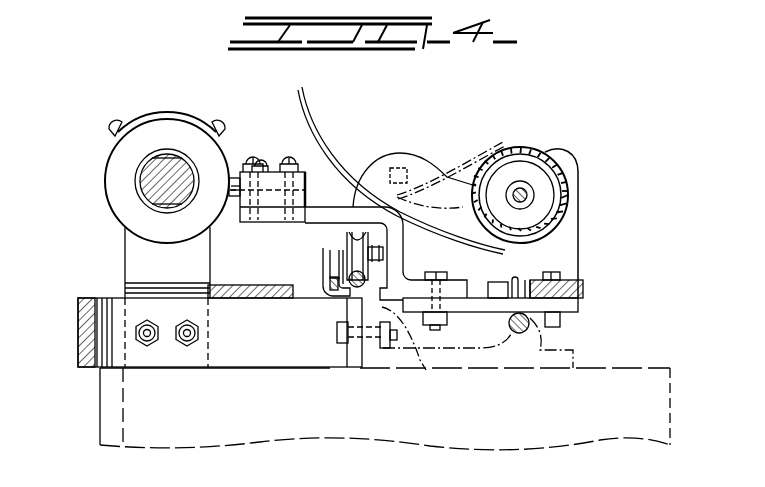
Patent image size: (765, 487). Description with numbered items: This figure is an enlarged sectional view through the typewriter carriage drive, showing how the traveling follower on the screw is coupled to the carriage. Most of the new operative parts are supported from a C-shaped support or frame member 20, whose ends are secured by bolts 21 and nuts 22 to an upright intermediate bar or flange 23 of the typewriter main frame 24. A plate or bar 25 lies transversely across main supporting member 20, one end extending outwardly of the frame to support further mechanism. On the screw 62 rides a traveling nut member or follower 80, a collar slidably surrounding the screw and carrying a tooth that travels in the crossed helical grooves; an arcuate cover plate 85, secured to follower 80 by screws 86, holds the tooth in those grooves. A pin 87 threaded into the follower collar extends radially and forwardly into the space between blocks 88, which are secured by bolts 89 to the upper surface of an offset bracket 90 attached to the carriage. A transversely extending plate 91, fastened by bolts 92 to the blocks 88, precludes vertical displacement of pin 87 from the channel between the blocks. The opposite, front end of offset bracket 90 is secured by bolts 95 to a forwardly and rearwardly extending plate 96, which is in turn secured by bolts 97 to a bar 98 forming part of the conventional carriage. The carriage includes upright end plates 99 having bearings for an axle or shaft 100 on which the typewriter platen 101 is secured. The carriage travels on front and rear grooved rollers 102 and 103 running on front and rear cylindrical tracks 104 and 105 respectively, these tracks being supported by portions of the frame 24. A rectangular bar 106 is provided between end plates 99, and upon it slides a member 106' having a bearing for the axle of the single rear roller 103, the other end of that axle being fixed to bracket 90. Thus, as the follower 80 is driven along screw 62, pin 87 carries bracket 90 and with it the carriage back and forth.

The C-shaped support or frame member 20 is at (90, 338).
The bolts 21 is at (336, 335).
The nuts 22 is at (386, 350).
The upright intermediate bar or flange 23 is at (418, 372).
The main frame 24 is at (634, 368).
The plate or bar 25 is at (243, 285).
The screw 62 is at (148, 188).
The traveling nut member or follower 80 is at (120, 170).
The arcuate cover plate 85 is at (167, 114).
The screws 86 is at (115, 127).
The pin 87 is at (233, 197).
The blocks 88 is at (305, 190).
The bolts 89 is at (291, 165).
The offset bracket 90 is at (320, 217).
The transversely extending plate 91 is at (264, 166).
The bolts 92 is at (252, 161).
The bolts 95 is at (440, 272).
The forwardly and rearwardly extending plate 96 is at (478, 300).
The bolts 97 is at (560, 276).
The bar 98 is at (584, 291).
The upright end plates 99 is at (570, 230).
The axle or shaft 100 is at (530, 195).
The typewriter platen 101 is at (560, 178).
The front grooved rollers 102 is at (520, 282).
The rear grooved roller 103 is at (362, 248).
The front cylindrical track 104 is at (517, 334).
The rear cylindrical track 105 is at (352, 287).
The rectangular bar 106 is at (321, 272).
The sliding member 106' is at (319, 261).